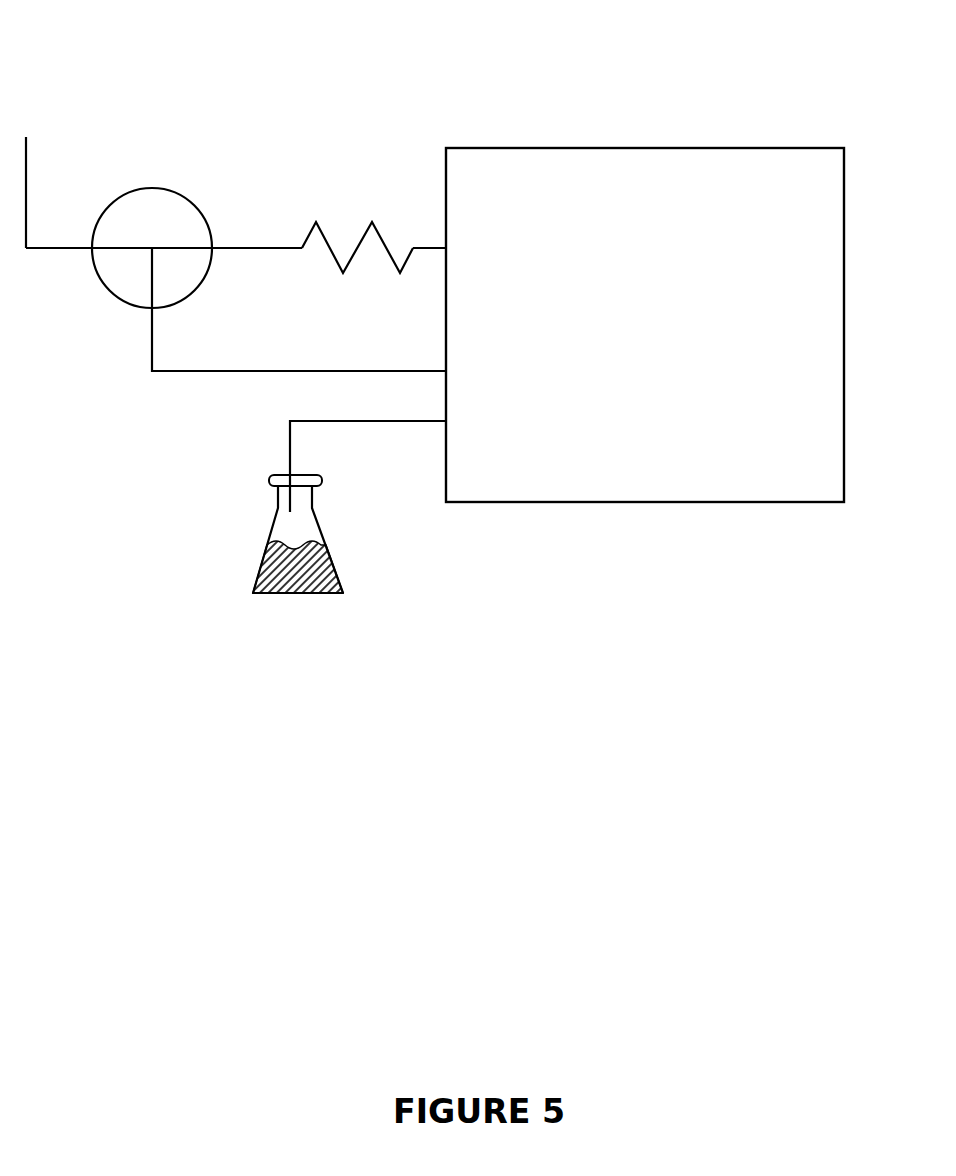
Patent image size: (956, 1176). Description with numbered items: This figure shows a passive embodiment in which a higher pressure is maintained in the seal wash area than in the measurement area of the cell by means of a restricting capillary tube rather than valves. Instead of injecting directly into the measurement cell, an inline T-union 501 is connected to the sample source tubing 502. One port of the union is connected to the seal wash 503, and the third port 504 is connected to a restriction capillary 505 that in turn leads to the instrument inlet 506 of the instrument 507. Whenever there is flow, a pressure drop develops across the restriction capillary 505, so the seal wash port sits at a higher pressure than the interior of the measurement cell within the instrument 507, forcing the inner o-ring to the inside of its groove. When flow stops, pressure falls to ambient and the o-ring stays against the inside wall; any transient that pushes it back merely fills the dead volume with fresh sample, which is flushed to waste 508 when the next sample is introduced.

The inline T-union 501 is at (160, 218).
The sample source tubing 502 is at (30, 168).
The seal wash 503 is at (147, 315).
The third port 504 is at (250, 245).
The restriction capillary 505 is at (371, 215).
The instrument inlet 506 is at (440, 263).
The instrument 507 is at (618, 188).
The waste 508 is at (250, 586).